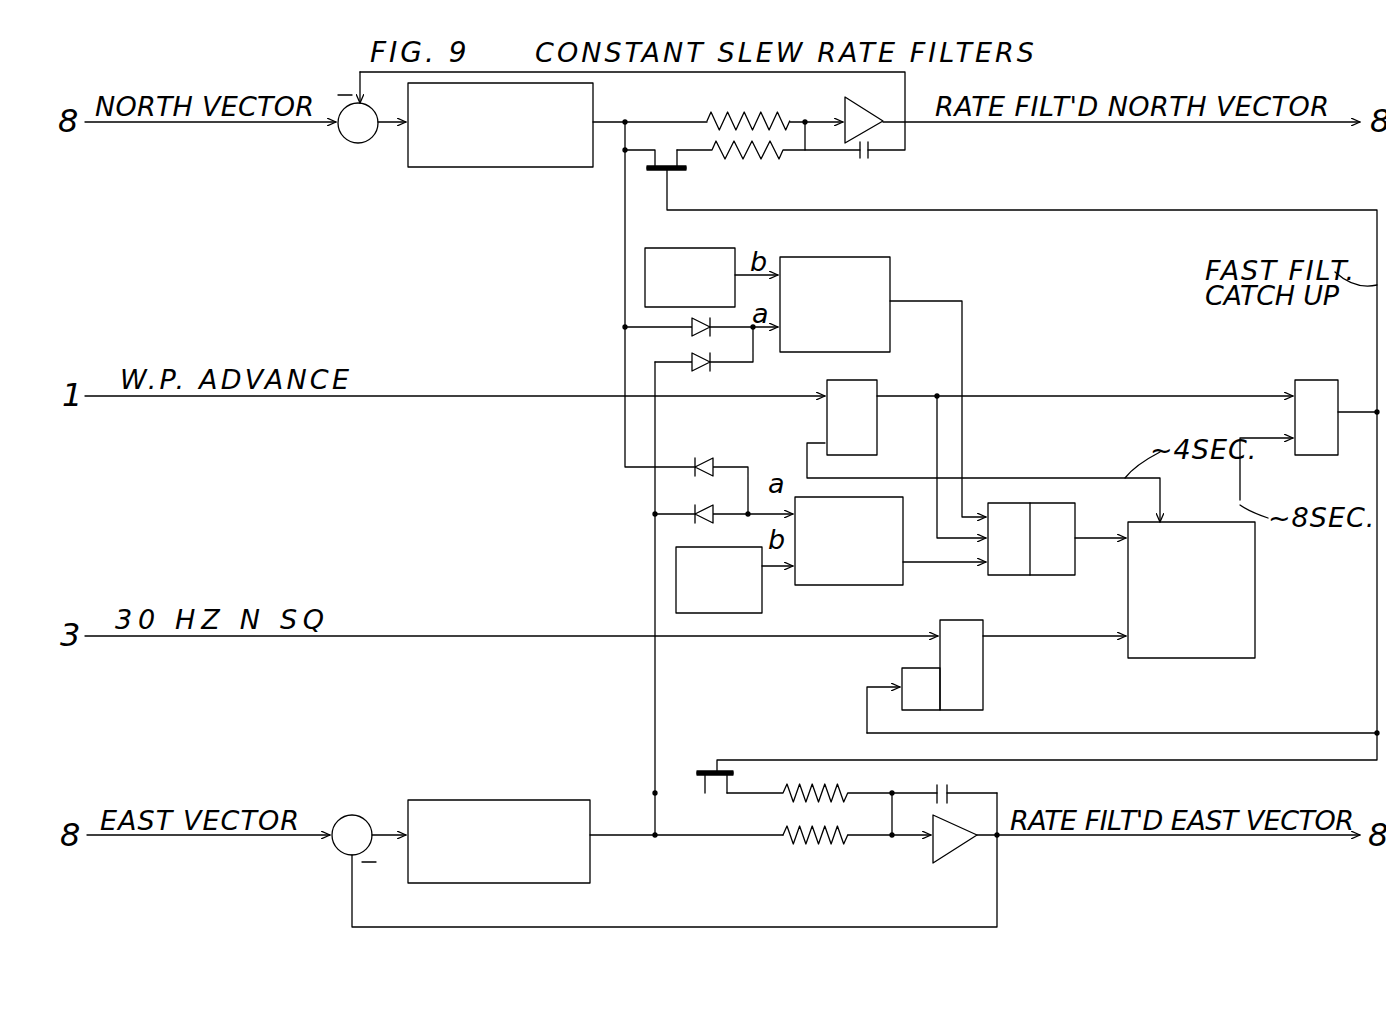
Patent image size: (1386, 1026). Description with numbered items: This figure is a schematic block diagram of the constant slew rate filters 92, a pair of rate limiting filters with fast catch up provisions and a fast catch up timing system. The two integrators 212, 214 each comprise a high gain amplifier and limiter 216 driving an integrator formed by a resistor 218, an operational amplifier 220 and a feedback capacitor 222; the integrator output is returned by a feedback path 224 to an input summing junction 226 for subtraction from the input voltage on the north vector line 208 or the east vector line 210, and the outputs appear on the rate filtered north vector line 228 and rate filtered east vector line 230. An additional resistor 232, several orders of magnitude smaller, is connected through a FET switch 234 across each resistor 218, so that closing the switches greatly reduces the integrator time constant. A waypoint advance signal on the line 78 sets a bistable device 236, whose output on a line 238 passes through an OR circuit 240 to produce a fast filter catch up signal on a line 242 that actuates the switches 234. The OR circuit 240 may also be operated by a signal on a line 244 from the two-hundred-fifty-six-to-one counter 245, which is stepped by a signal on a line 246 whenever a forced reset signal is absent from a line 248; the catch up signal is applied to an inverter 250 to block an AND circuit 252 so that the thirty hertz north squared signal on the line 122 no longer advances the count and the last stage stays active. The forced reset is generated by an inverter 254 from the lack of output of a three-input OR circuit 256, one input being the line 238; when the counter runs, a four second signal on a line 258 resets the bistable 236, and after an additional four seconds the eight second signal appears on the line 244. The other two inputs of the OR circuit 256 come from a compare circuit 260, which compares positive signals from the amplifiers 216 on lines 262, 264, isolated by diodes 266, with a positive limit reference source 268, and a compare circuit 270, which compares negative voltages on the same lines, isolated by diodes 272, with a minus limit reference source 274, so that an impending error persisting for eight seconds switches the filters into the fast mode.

The constant slew rate filters 92 is at (352, 92).
The north vector input line 208 is at (185, 122).
The east vector input line 210 is at (190, 835).
The integrator 212 is at (404, 170).
The integrator 214 is at (388, 798).
The high gain amplifier and limiter 216 is at (505, 168).
The resistor 218 is at (735, 114).
The operational amplifier 220 is at (885, 90).
The feedback capacitor 222 is at (868, 160).
The feedback path 224 is at (640, 73).
The input summing junction 226 is at (368, 140).
The rate filtered north vector output line 228 is at (1112, 124).
The rate filtered east vector output line 230 is at (1178, 838).
The additional resistor 232 is at (765, 160).
The FET electronic switch 234 is at (672, 176).
The bistable device 236 is at (862, 384).
The bistable output line 238 is at (1045, 378).
The OR circuit 240 is at (1295, 385).
The fast filter catch up signal line 242 is at (1377, 352).
The eight second signal line 244 is at (1240, 490).
The 256:1 counter 245 is at (1255, 586).
The counter clock line 246 is at (1005, 640).
The forced reset line 248 is at (1092, 540).
The inverter 250 is at (902, 672).
The AND gate 252 is at (983, 704).
The inverter 254 is at (1072, 508).
The OR circuit 256 is at (1005, 502).
The four second signal line 258 is at (1093, 478).
The compare circuit 260 is at (855, 258).
The amplifier output line 262 is at (622, 236).
The amplifier output line 264 is at (653, 590).
The diodes 266 is at (695, 350).
The positive limit reference source 268 is at (712, 248).
The compare circuit 270 is at (870, 586).
The diodes 272 is at (692, 510).
The minus limit reference source 274 is at (763, 605).
The waypoint advance signal line 78 is at (372, 397).
The 30 Hz north squared signal line 122 is at (380, 636).